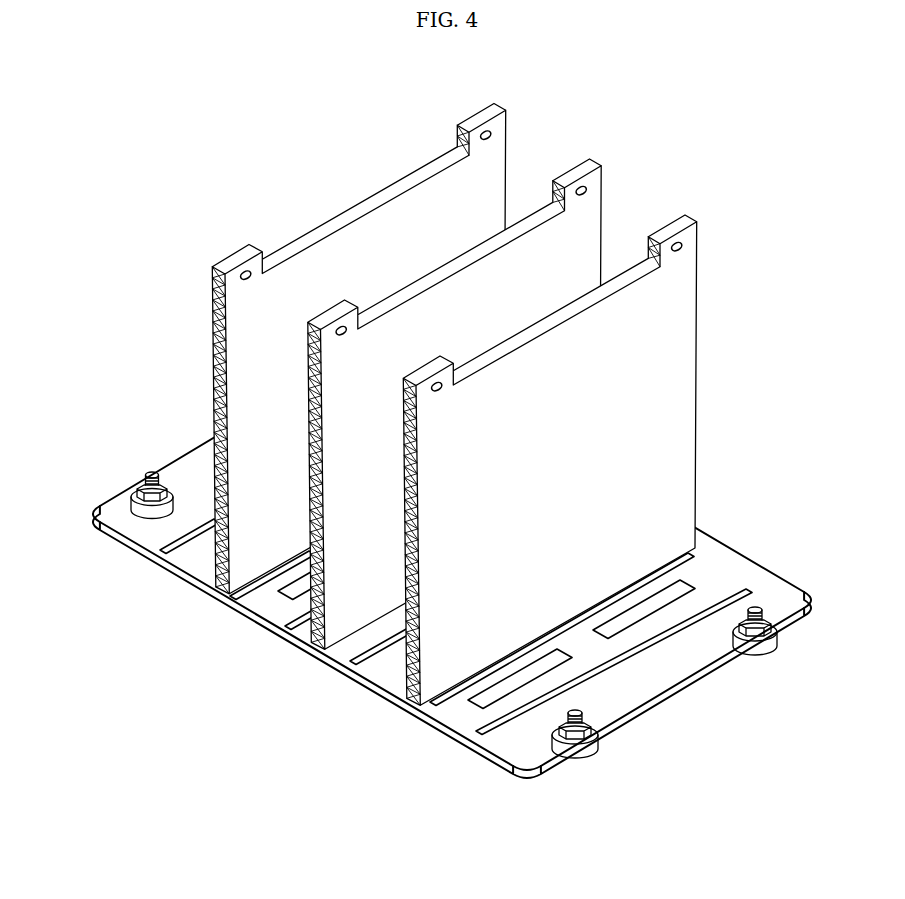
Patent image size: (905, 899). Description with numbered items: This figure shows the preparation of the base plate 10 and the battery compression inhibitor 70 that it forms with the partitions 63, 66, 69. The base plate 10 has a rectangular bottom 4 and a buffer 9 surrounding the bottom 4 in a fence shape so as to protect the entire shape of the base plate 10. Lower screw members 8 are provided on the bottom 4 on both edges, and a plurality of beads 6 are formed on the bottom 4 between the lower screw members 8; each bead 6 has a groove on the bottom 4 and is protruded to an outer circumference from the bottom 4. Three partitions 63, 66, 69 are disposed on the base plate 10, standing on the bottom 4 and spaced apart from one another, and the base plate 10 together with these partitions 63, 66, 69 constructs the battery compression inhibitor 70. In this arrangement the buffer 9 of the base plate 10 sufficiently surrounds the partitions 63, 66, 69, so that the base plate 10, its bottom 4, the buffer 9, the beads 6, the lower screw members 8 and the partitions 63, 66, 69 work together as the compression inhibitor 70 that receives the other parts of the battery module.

The battery compression inhibitor 70 is at (231, 98).
The bottom 4 is at (113, 527).
The buffer 9 is at (191, 596).
The base plate 10 is at (384, 704).
The bead 6 is at (735, 597).
The lower screw member 8 is at (592, 740).
The partition 63 is at (506, 154).
The partition 66 is at (603, 212).
The partition 69 is at (698, 268).